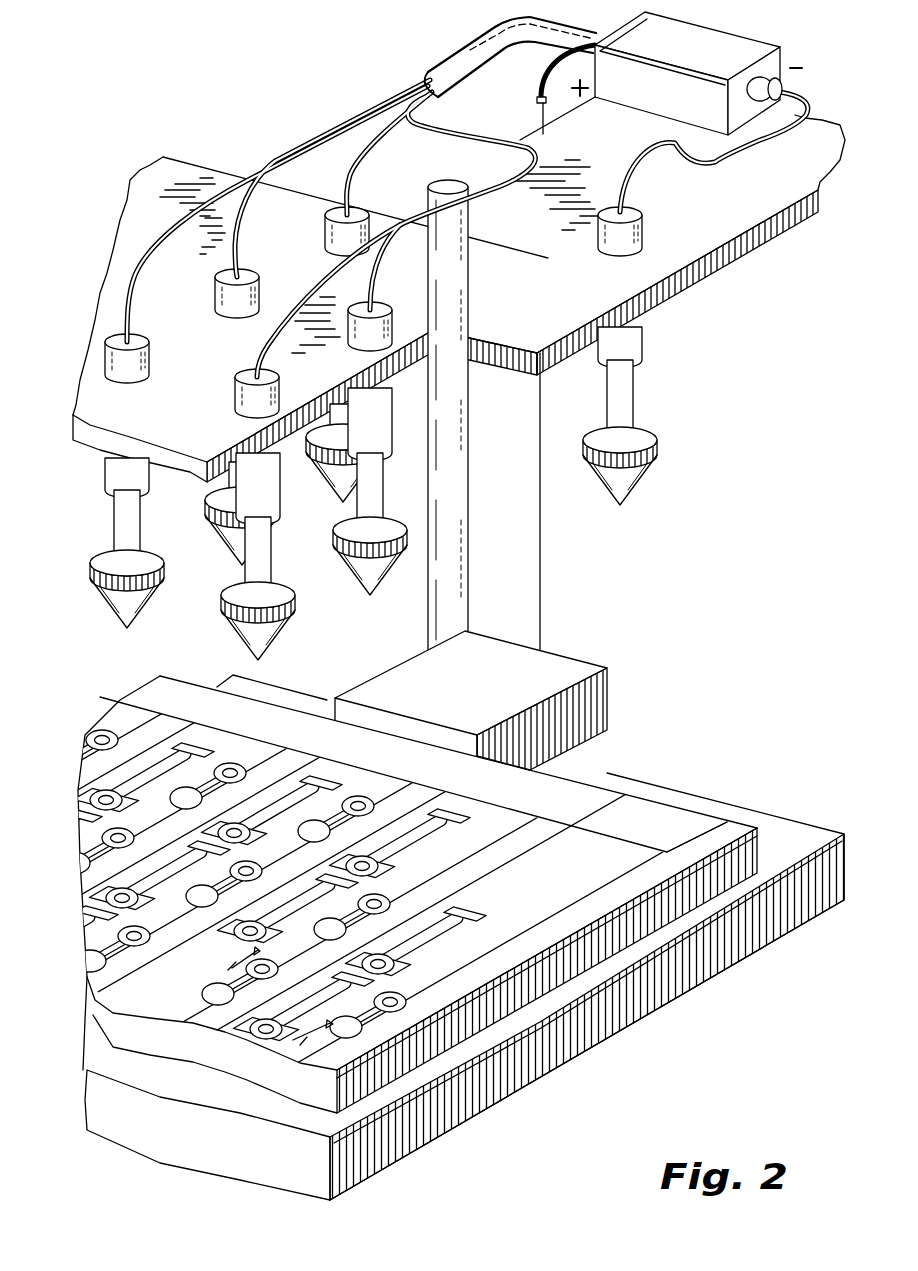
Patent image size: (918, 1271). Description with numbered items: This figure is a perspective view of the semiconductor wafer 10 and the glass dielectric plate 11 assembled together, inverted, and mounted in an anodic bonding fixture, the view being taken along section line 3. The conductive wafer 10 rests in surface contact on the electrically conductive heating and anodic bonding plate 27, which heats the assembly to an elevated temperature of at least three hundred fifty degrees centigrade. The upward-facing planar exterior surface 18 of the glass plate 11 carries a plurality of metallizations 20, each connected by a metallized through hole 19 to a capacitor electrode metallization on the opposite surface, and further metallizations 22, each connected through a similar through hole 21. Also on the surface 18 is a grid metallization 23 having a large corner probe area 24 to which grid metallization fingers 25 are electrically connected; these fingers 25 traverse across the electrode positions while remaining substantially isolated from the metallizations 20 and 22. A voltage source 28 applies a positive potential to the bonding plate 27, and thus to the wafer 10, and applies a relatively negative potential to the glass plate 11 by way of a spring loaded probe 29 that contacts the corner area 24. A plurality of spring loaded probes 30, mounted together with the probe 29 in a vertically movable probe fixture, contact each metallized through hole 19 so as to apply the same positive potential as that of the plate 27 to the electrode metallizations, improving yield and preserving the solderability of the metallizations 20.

The section line 3- 3 is at (281, 996).
The semiconductor wafer 10 is at (753, 870).
The glass dielectric plate 11 is at (753, 847).
The planar exterior surface 18 is at (194, 690).
The through hole 19 is at (374, 903).
The metallization 20 is at (325, 930).
The through hole 21 is at (385, 960).
The metallization 22 is at (425, 928).
The grid metallization 23 is at (631, 800).
The corner probe area 24 is at (690, 825).
The grid metallization fingers 25 is at (300, 875).
The heating and anodic bonding plate 27 is at (653, 1000).
The voltage source 28 is at (628, 90).
The spring loaded probe 29 is at (640, 476).
The spring loaded probes 30 is at (222, 540).